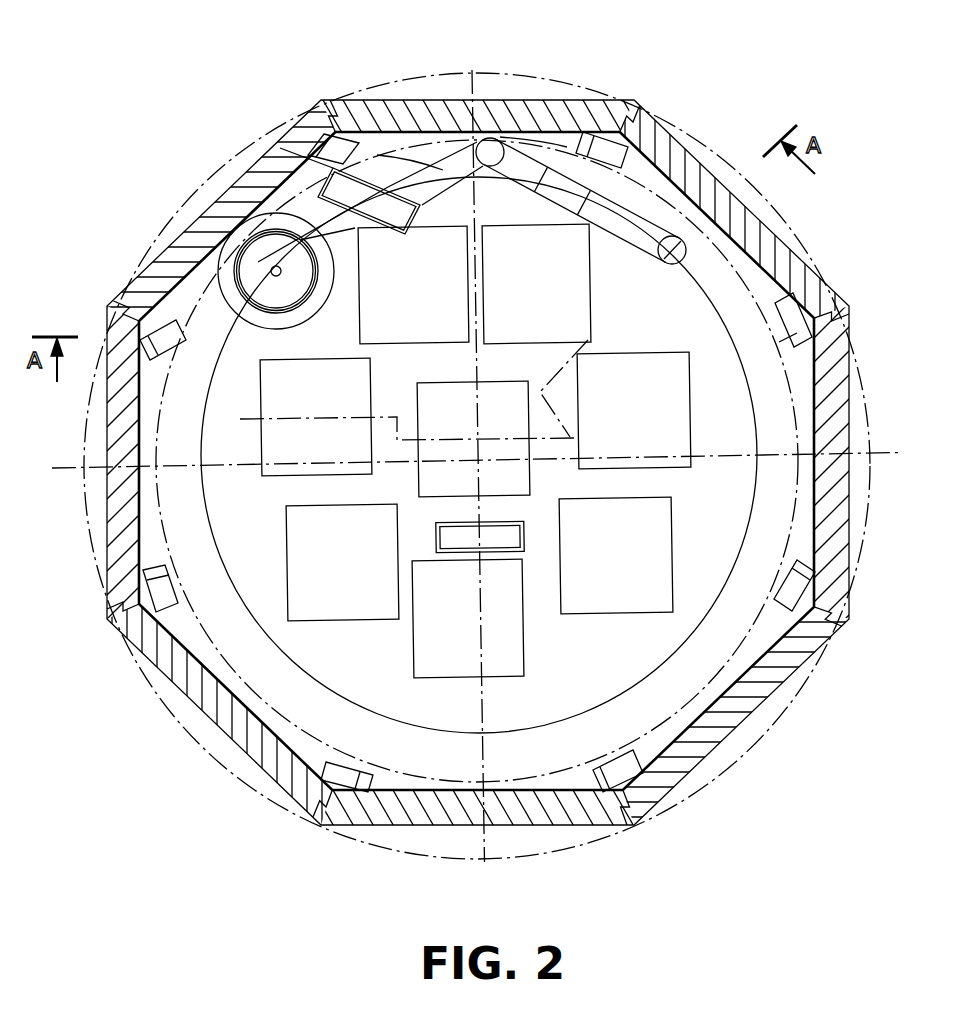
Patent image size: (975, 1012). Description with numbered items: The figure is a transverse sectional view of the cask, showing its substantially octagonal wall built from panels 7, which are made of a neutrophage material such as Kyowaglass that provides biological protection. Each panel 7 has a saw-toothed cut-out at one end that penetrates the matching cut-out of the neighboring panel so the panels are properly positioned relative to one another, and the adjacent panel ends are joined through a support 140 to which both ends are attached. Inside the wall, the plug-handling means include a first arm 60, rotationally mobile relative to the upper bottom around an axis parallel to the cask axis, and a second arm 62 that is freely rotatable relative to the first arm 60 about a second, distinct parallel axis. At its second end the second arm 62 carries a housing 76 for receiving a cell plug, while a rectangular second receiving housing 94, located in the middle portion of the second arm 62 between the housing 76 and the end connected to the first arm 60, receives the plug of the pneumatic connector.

The panel 7 is at (499, 100).
The second arm 62 is at (385, 113).
The second receiving housing 94 is at (318, 186).
The housing 76 is at (238, 250).
The first arm 60 is at (632, 190).
The support 140 is at (800, 300).